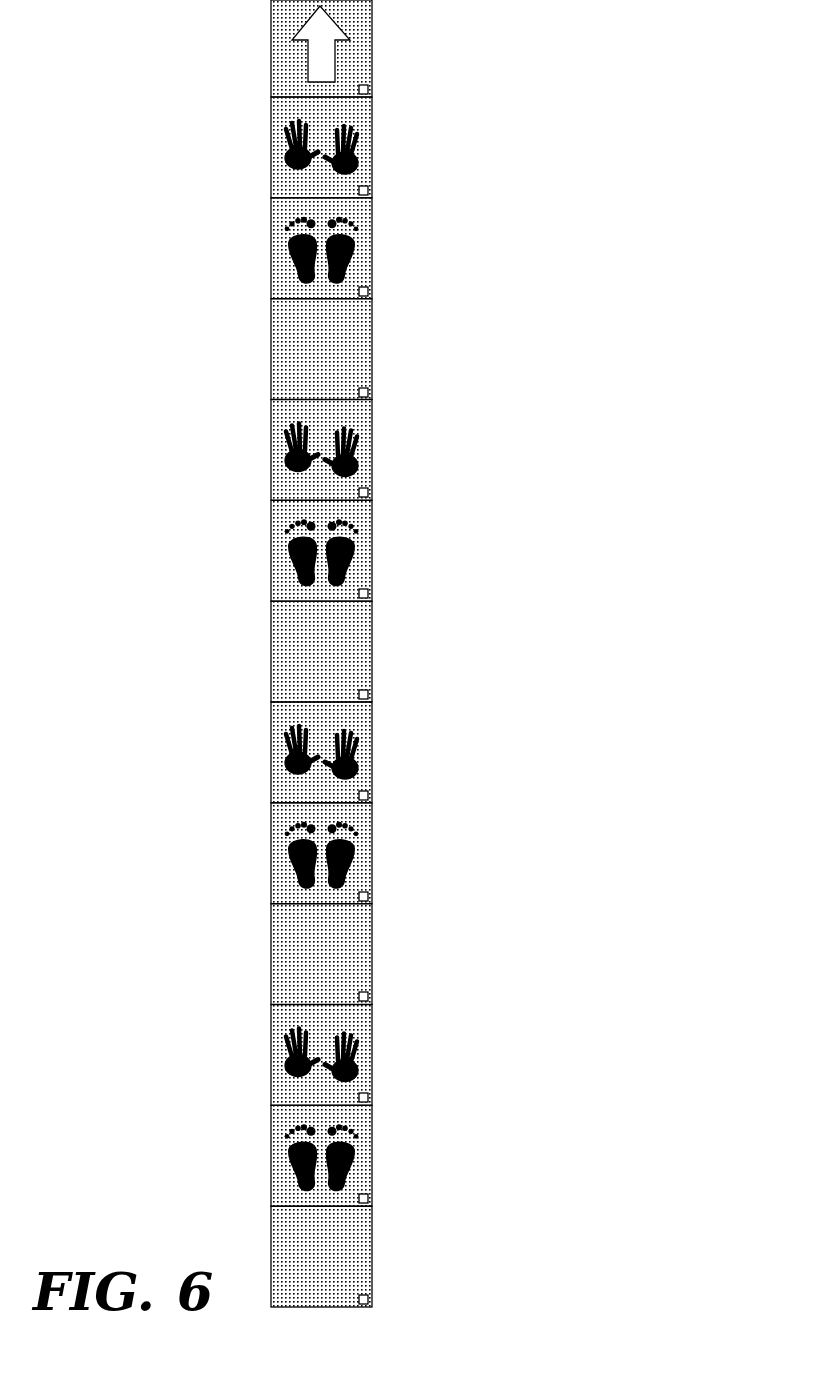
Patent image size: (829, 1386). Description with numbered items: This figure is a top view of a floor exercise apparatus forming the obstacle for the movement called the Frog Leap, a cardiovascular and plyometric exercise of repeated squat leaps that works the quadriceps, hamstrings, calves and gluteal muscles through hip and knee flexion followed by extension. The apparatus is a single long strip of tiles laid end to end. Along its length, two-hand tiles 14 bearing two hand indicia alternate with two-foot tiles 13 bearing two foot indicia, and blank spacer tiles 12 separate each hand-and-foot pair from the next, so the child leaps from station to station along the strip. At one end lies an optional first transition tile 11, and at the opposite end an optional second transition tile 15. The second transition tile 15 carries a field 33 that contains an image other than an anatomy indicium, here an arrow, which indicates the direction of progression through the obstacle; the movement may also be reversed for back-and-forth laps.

The field 33 is at (330, 32).
The second transition tile 15 is at (362, 48).
The spacer tile 12 is at (372, 955).
The two-hand tile 14 is at (364, 1057).
The two-foot tile 13 is at (372, 1157).
The first transition tile 11 is at (372, 1257).